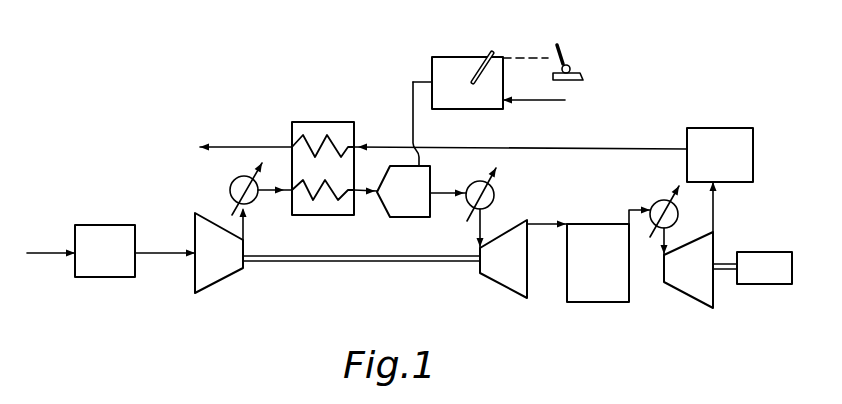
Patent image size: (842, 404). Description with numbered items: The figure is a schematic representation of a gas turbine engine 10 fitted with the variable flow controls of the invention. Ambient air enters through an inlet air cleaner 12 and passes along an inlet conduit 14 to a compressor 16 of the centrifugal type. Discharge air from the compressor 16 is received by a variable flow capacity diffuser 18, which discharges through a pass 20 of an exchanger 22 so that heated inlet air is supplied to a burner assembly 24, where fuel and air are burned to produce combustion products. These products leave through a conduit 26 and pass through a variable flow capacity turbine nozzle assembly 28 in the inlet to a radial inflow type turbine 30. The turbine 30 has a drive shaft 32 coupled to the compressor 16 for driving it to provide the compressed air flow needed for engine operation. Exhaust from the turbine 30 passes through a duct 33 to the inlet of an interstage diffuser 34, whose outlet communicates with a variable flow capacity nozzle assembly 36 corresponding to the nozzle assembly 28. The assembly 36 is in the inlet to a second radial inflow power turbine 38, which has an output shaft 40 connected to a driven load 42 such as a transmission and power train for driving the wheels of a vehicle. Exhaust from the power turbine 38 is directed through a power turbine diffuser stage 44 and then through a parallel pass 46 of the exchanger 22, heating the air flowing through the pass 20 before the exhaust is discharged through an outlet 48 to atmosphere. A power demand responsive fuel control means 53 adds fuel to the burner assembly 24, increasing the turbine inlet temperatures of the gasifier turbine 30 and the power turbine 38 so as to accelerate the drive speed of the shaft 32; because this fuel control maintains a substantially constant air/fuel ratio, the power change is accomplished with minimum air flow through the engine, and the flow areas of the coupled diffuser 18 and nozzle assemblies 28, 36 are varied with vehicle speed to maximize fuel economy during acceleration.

The gas turbine engine 10 is at (322, 272).
The inlet air cleaner 12 is at (108, 262).
The inlet conduit 14 is at (163, 255).
The compressor 16 is at (218, 265).
The variable flow capacity diffuser 18 is at (231, 184).
The pass 20 is at (328, 200).
The exchanger 22 is at (339, 157).
The burner assembly 24 is at (418, 173).
The conduit 26 is at (445, 191).
The variable flow capacity turbine nozzle assembly 28 is at (493, 187).
The turbine 30 is at (497, 270).
The drive shaft 32 is at (420, 262).
The duct 33 is at (543, 222).
The interstage diffuser 34 is at (607, 290).
The variable flow capacity nozzle assembly 36 is at (665, 200).
The second radial inflow power turbine 38 is at (690, 285).
The output shaft 40 is at (727, 263).
The driven load 42 is at (765, 265).
The power turbine diffuser stage 44 is at (742, 157).
The parallel pass 46 is at (310, 137).
The outlet 48 is at (250, 147).
The fuel control means 53 is at (447, 68).